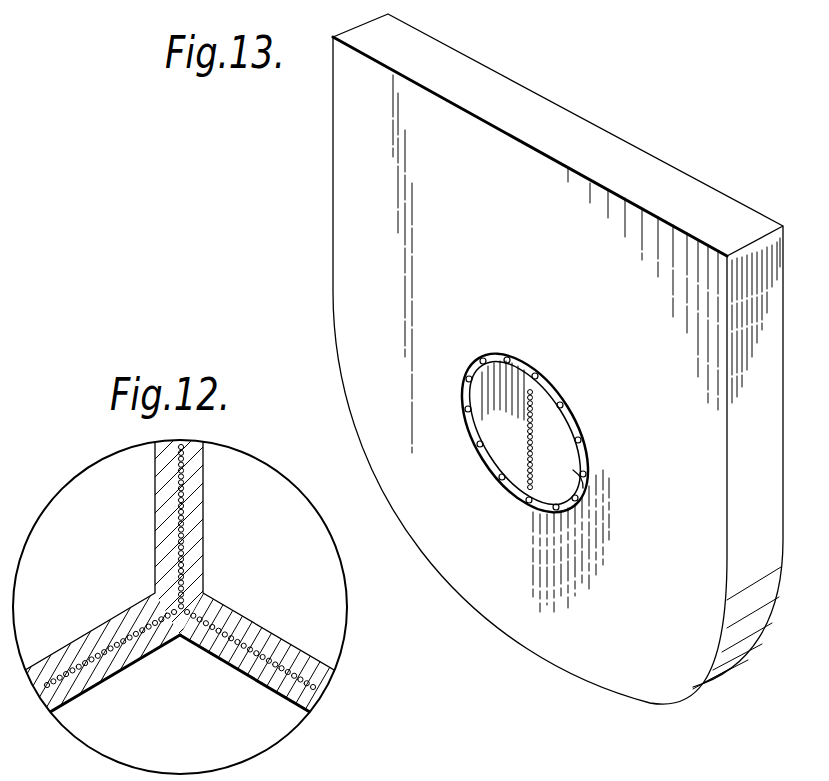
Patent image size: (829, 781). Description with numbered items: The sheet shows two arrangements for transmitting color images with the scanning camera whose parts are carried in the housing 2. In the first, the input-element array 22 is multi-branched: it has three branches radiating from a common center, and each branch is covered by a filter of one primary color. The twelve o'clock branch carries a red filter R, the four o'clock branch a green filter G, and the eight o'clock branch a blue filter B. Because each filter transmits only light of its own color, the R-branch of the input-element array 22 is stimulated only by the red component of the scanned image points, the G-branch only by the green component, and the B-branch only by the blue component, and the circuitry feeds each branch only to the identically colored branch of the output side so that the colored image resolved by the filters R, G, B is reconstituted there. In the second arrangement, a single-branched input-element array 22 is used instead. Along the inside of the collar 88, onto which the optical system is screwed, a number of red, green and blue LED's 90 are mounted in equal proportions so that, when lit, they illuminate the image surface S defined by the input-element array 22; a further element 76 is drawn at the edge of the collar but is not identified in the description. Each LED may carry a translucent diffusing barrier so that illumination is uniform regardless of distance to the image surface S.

In FIG. 13, the housing 2 is at (442, 220).
In FIG. 12, the input-element array 22 is at (223, 556).
In FIG. 13, the input-element array 22 is at (515, 411).
In FIG. 13, the collar 88 is at (466, 421).
In FIG. 13, the LED's 90 is at (478, 437).
In FIG. 13, the port opening 76 is at (585, 487).
In FIG. 13, the image surface S is at (578, 486).
In FIG. 12, the red filter R is at (162, 494).
In FIG. 12, the blue filter B is at (117, 663).
In FIG. 12, the green filter G is at (292, 660).